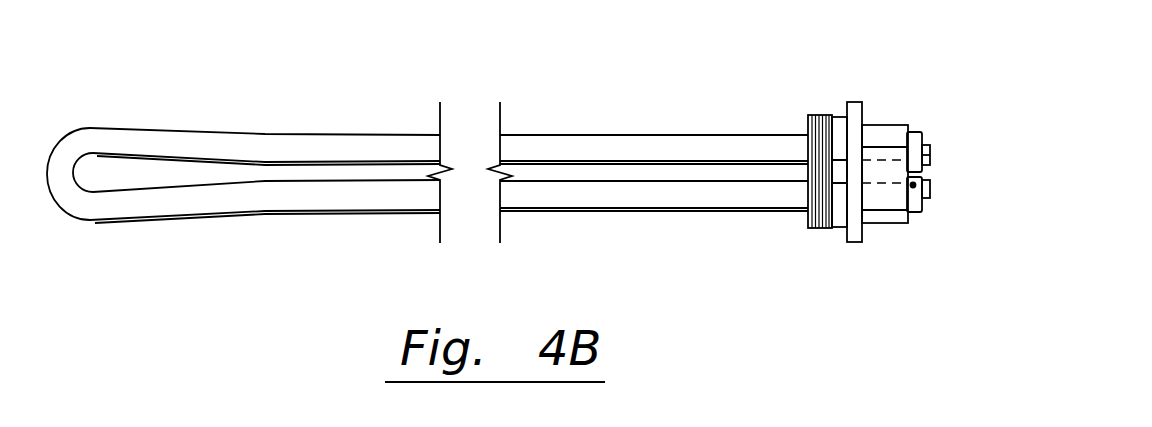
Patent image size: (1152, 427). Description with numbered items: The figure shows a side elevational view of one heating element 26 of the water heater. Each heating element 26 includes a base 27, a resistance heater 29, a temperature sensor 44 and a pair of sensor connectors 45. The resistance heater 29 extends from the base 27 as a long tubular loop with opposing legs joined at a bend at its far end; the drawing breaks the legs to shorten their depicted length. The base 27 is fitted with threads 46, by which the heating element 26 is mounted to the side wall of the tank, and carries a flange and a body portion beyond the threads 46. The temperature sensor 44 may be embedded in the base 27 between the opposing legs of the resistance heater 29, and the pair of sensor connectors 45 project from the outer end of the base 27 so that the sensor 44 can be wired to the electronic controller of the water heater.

The heating element 26 is at (202, 235).
The resistance heater 29 is at (607, 135).
The base 27 is at (953, 181).
The temperature sensor 44 is at (878, 185).
The sensor connectors 45 is at (945, 184).
The threads 46 is at (818, 232).